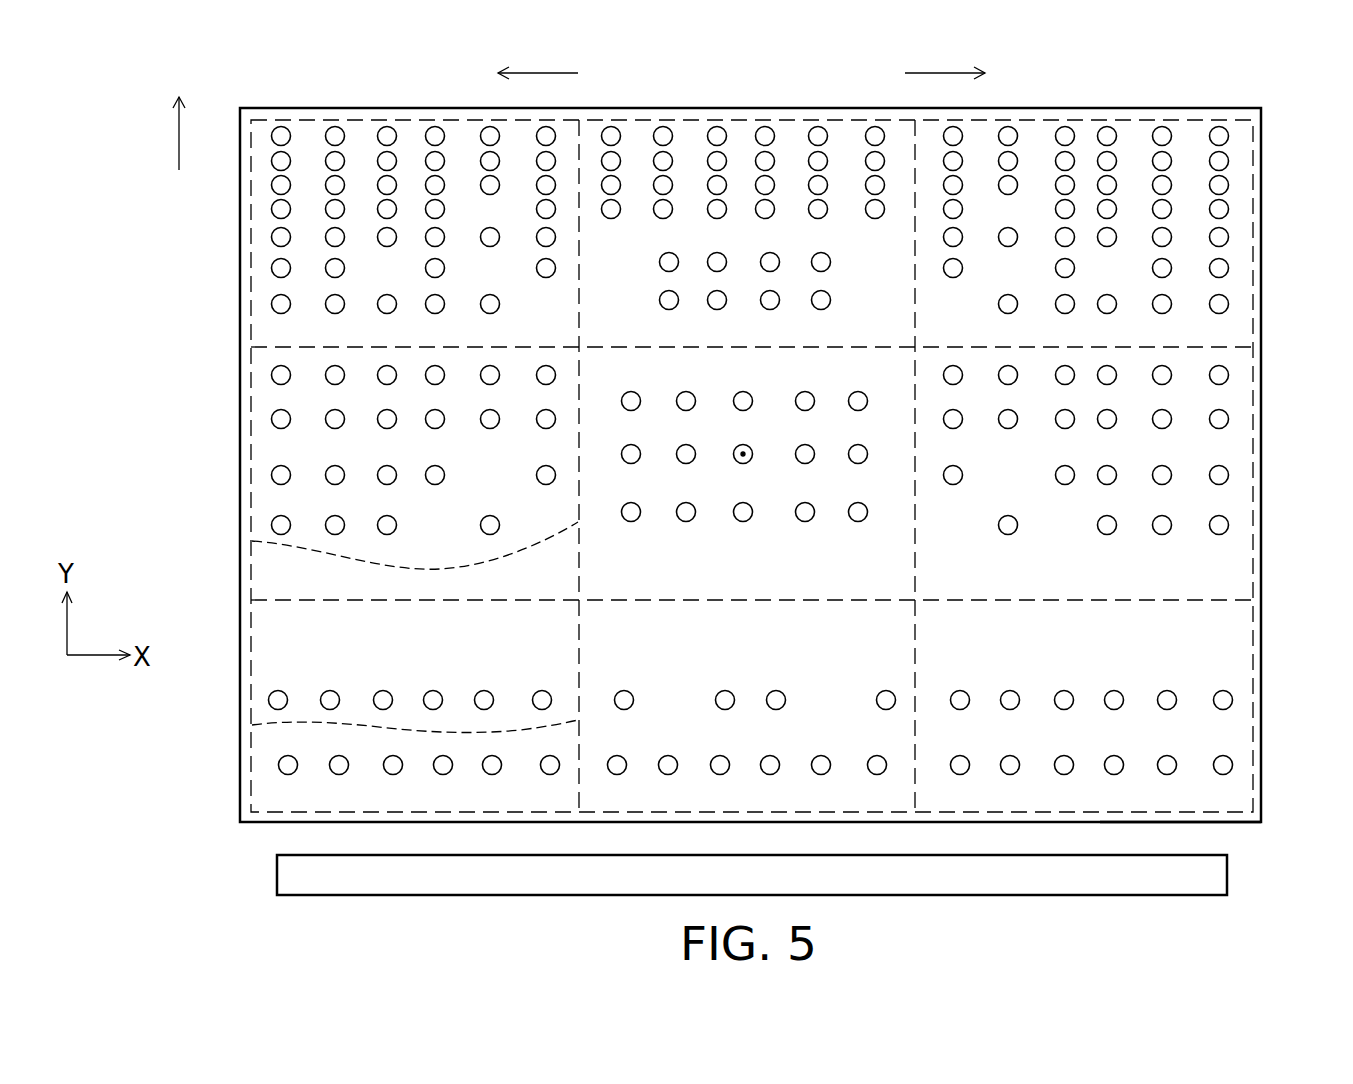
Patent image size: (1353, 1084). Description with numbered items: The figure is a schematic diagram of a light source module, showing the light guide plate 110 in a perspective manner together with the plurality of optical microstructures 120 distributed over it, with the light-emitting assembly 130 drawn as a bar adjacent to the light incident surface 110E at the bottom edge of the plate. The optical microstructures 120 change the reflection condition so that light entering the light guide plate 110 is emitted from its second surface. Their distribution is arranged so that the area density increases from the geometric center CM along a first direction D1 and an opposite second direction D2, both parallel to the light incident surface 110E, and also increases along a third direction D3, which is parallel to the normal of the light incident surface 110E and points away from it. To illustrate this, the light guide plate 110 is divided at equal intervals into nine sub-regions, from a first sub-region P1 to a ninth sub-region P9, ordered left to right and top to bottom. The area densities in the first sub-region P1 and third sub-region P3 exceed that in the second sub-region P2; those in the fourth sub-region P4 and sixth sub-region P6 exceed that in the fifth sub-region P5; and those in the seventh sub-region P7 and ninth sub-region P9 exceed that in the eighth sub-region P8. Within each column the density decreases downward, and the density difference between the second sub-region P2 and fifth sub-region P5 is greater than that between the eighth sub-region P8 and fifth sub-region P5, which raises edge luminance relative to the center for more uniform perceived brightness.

The light guide plate 110 is at (1261, 304).
The light incident surface 110E is at (1228, 834).
The optical microstructures 120 is at (1222, 374).
The light-emitting assembly 130 is at (277, 873).
The geometric center CM is at (746, 452).
The first sub-region P1 is at (251, 246).
The second sub-region P2 is at (745, 118).
The third sub-region P3 is at (1253, 246).
The fourth sub-region P4 is at (251, 441).
The fifth sub-region P5 is at (252, 541).
The sixth sub-region P6 is at (1253, 441).
The seventh sub-region P7 is at (251, 634).
The eighth sub-region P8 is at (252, 725).
The ninth sub-region P9 is at (1253, 695).
The first direction D1 is at (945, 60).
The second direction D2 is at (538, 60).
The third direction D3 is at (162, 133).